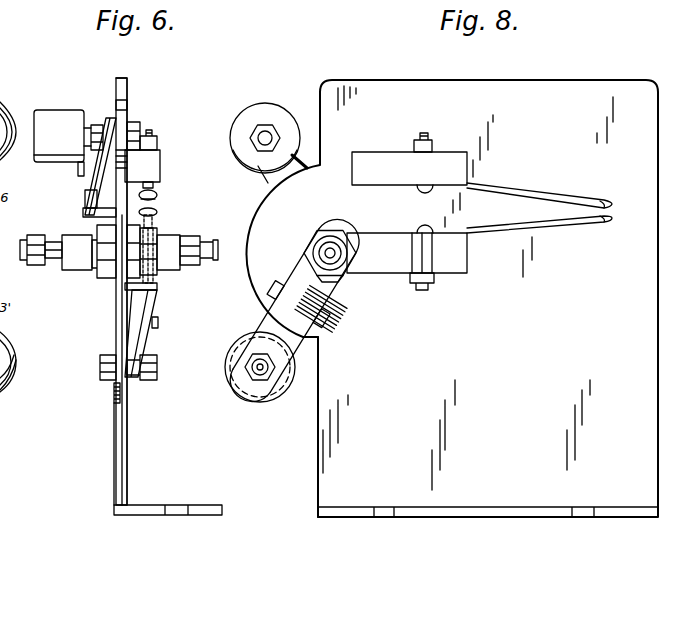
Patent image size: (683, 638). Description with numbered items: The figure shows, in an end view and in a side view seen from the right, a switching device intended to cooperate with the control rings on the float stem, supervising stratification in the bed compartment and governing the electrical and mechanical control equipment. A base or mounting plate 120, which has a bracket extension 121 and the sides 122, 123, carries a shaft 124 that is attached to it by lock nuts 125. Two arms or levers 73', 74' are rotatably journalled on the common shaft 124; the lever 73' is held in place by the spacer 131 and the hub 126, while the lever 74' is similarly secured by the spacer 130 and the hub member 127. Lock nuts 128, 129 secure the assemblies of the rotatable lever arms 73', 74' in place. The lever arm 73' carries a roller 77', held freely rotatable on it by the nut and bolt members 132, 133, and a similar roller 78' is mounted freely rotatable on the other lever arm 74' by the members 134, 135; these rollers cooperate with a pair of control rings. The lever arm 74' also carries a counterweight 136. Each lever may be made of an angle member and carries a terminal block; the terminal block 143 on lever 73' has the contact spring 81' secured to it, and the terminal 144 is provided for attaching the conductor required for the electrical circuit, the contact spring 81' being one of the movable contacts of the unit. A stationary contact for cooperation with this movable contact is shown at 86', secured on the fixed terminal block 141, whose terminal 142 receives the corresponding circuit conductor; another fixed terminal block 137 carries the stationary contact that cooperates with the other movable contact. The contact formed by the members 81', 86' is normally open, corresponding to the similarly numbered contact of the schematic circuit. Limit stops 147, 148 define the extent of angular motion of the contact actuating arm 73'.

In FIG. 6, the base or mounting plate 120 is at (120, 448).
In FIG. 8, the base or mounting plate 120 is at (311, 474).
In FIG. 6, the bracket extension 121 is at (158, 515).
In FIG. 8, the bracket extension 121 is at (462, 517).
In FIG. 6, the side 122 is at (109, 434).
In FIG. 6, the side 123 is at (133, 430).
In FIG. 8, the side 123 is at (452, 298).
In FIG. 6, the shaft 124 is at (20, 258).
In FIG. 8, the shaft 124 is at (317, 252).
In FIG. 6, the lock nuts 125 is at (122, 262).
In FIG. 8, the lock nuts 125 is at (342, 245).
In FIG. 6, the hub 126 is at (180, 262).
In FIG. 8, the hub 126 is at (339, 273).
In FIG. 6, the hub member 127 is at (73, 260).
In FIG. 6, the lock nut 128 is at (55, 240).
In FIG. 6, the lock nut 129 is at (205, 238).
In FIG. 8, the lock nut 129 is at (328, 234).
In FIG. 6, the spacer 130 is at (97, 243).
In FIG. 6, the spacer 131 is at (148, 247).
In FIG. 6, the nut and bolt member 132 is at (10, 352).
In FIG. 6, the nut and bolt member 133 is at (150, 378).
In FIG. 8, the nut and bolt member 133 is at (251, 386).
In FIG. 6, the mounting member 134 is at (138, 125).
In FIG. 8, the mounting member 134 is at (268, 134).
In FIG. 6, the mounting member 135 is at (95, 125).
In FIG. 6, the counterweight 136 is at (60, 116).
In FIG. 6, the fixed terminal block 137 is at (80, 172).
In FIG. 6, the terminal block 141 is at (150, 163).
In FIG. 8, the terminal block 141 is at (383, 160).
In FIG. 6, the terminal 142 is at (157, 140).
In FIG. 8, the terminal 142 is at (430, 132).
In FIG. 8, the terminal block 143 is at (395, 272).
In FIG. 8, the terminal 144 is at (434, 285).
In FIG. 6, the limit stop 147 is at (158, 286).
In FIG. 8, the limit stop 147 is at (270, 296).
In FIG. 6, the limit stop 148 is at (158, 325).
In FIG. 8, the limit stop 148 is at (327, 328).
In FIG. 6, the lever arm 73' is at (164, 333).
In FIG. 8, the lever arm 73' is at (302, 310).
In FIG. 6, the lever arm 74' is at (82, 166).
In FIG. 8, the lever arm 74' is at (273, 174).
In FIG. 6, the roller 77' is at (60, 386).
In FIG. 8, the roller 77' is at (260, 387).
In FIG. 6, the roller 78' is at (85, 119).
In FIG. 8, the roller 78' is at (265, 126).
In FIG. 6, the contact spring 81' is at (169, 245).
In FIG. 8, the contact spring 81' is at (539, 238).
In FIG. 6, the stationary contact 86' is at (169, 193).
In FIG. 8, the stationary contact 86' is at (539, 188).